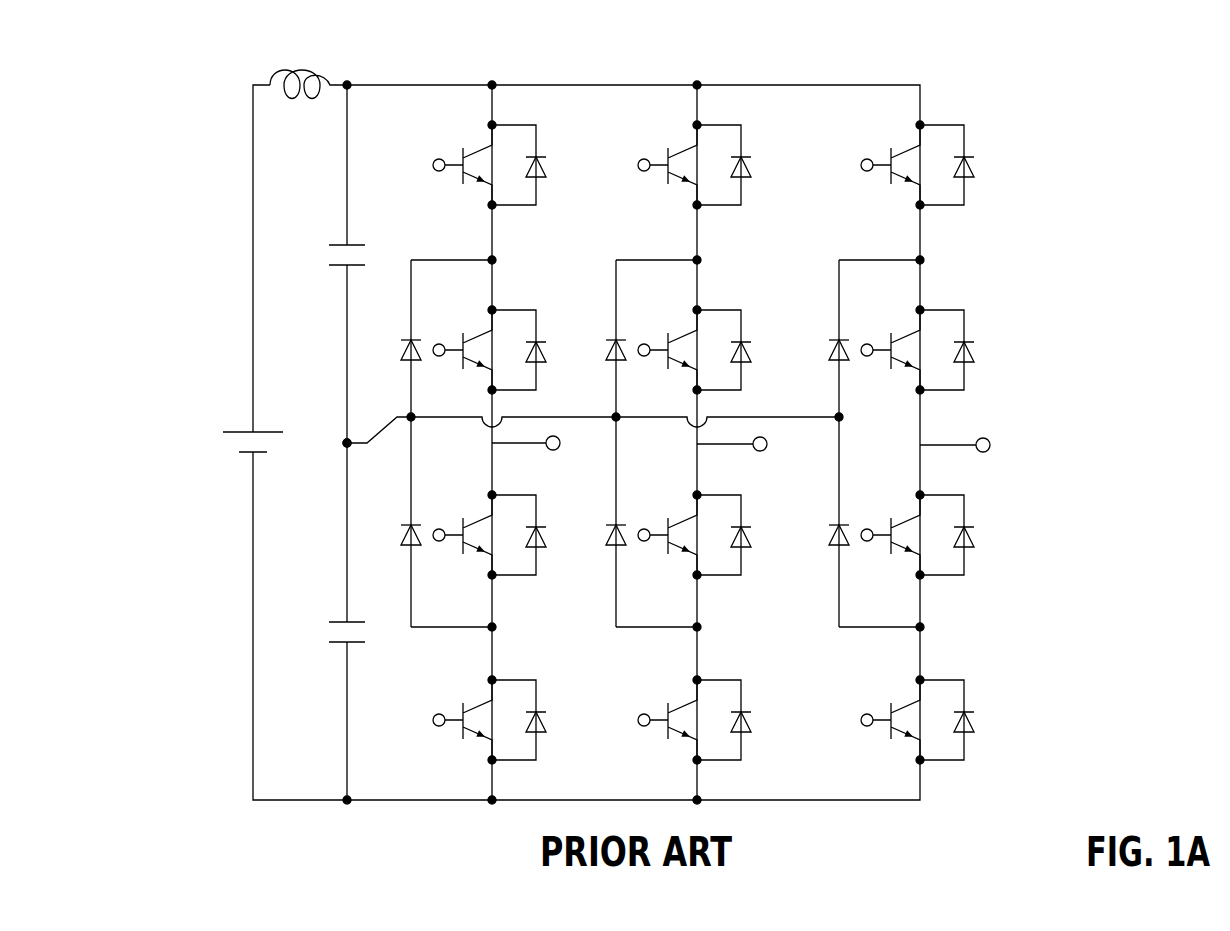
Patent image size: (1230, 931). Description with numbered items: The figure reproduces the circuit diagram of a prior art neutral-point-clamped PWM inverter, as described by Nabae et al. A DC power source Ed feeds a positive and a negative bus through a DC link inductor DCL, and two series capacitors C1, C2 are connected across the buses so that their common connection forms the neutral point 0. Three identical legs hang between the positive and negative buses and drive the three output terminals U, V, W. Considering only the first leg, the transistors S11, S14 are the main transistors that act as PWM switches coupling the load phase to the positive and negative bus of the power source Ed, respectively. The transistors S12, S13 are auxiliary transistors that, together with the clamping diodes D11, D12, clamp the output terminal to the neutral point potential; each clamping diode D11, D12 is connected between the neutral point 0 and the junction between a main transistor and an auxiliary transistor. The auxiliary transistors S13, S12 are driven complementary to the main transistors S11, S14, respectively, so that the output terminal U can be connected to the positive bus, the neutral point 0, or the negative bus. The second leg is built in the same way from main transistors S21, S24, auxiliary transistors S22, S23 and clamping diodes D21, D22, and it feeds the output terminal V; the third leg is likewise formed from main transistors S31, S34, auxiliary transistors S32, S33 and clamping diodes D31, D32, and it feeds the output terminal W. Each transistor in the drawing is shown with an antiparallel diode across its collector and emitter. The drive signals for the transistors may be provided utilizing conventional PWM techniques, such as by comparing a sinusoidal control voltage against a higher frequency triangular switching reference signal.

The DC link inductor DCL is at (300, 68).
The power source Ed is at (237, 440).
The upper DC link capacitor C1 is at (330, 257).
The lower DC link capacitor C2 is at (330, 634).
The neutral point 0 is at (338, 442).
The U-phase output terminal U is at (539, 444).
The V-phase output terminal V is at (745, 445).
The W-phase output terminal W is at (972, 446).
The main transistor S11 is at (489, 151).
The auxiliary transistor S12 is at (489, 336).
The auxiliary transistor S13 is at (489, 521).
The main transistor S14 is at (489, 706).
The switching element S21 is at (694, 151).
The switching element S22 is at (694, 336).
The switching element S23 is at (694, 521).
The switching element S24 is at (694, 706).
The switching element S31 is at (917, 151).
The switching element S32 is at (917, 336).
The switching element S33 is at (917, 521).
The switching element S34 is at (917, 706).
The diode D11 is at (389, 353).
The diode D12 is at (389, 538).
The clamping diode D21 is at (594, 353).
The clamping diode D22 is at (594, 538).
The clamping diode D31 is at (817, 353).
The clamping diode D32 is at (817, 538).